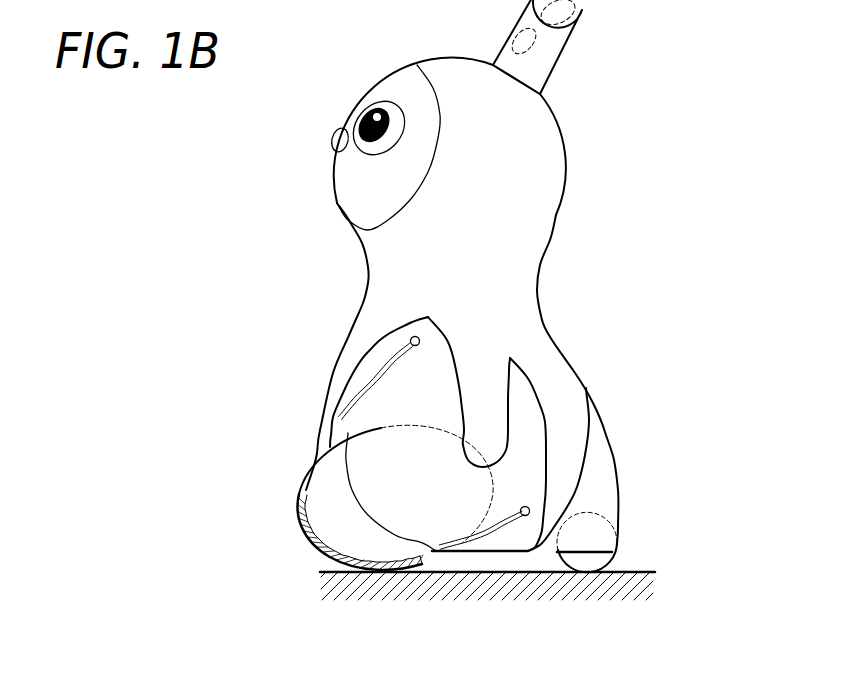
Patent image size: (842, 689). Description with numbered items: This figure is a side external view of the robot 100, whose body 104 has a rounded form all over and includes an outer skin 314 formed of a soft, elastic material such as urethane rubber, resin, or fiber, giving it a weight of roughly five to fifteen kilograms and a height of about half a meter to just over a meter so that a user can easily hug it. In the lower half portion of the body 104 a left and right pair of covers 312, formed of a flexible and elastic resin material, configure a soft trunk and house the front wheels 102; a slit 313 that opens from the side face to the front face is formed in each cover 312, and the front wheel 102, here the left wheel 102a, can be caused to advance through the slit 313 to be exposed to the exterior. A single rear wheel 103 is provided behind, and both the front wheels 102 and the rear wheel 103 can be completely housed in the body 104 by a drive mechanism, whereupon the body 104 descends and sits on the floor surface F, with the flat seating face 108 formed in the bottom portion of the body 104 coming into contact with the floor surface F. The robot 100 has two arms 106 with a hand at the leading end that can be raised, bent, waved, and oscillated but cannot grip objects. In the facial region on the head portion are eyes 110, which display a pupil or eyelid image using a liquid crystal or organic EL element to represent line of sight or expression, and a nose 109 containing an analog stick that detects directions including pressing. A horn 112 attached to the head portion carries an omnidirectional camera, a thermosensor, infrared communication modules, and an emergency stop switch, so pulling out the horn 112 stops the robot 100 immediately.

The robot 100 is at (641, 119).
The front wheels 102 is at (354, 487).
The left wheel 102a is at (307, 513).
The rear wheel 103 is at (618, 553).
The body 104 is at (517, 303).
The arm 106 is at (505, 402).
The seating face 108 is at (488, 552).
The nose 109 is at (333, 143).
The eye 110 is at (358, 118).
The horn 112 is at (558, 62).
The cover 312 is at (323, 418).
The slit 313 is at (360, 373).
The outer skin 314 is at (542, 263).
The floor surface F is at (535, 571).